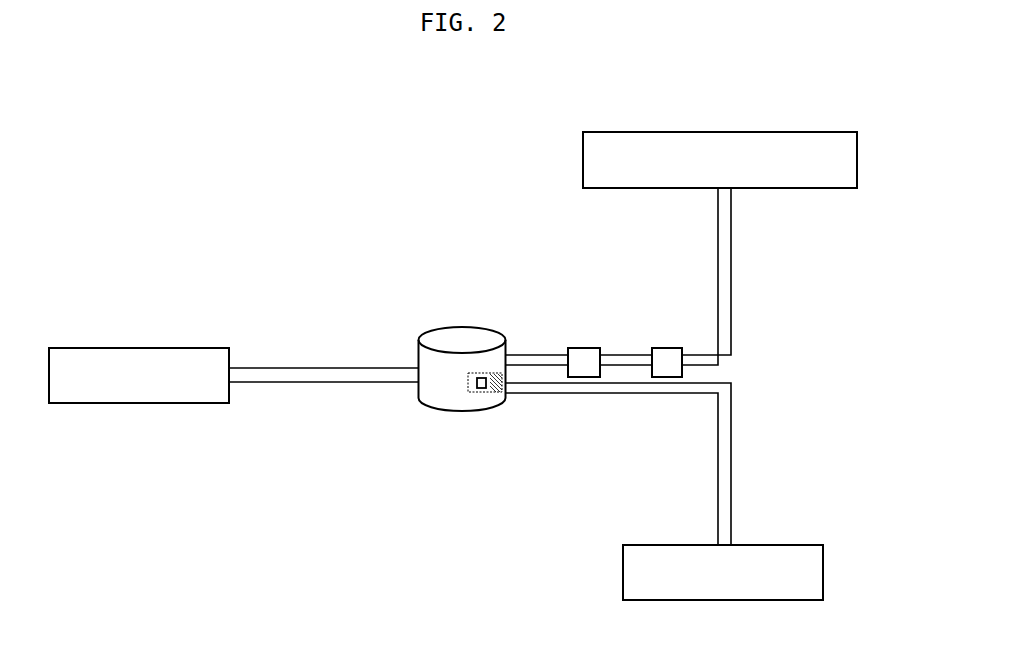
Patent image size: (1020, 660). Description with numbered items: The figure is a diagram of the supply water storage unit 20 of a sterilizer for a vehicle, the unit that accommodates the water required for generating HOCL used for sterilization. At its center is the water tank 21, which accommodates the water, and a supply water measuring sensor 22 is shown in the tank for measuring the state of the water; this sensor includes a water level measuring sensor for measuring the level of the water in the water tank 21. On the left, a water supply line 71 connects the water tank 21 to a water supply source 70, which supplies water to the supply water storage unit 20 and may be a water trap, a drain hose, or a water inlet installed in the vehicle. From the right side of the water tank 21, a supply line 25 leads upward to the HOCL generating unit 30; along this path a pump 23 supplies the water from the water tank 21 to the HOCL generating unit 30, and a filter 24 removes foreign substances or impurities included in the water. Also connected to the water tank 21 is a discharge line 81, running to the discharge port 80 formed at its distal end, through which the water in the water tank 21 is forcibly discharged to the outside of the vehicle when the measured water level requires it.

The supply water storage unit 20 is at (437, 339).
The water tank 21 is at (448, 337).
The supply water measuring sensor 22 is at (478, 373).
The pump 23 is at (582, 377).
The filter 24 is at (668, 348).
The supply line 25 is at (672, 276).
The HOCL generating unit 30 is at (720, 160).
The water supply source 70 is at (139, 375).
The water supply line 71 is at (323, 357).
The discharge port 80 is at (723, 572).
The discharge line 81 is at (687, 464).